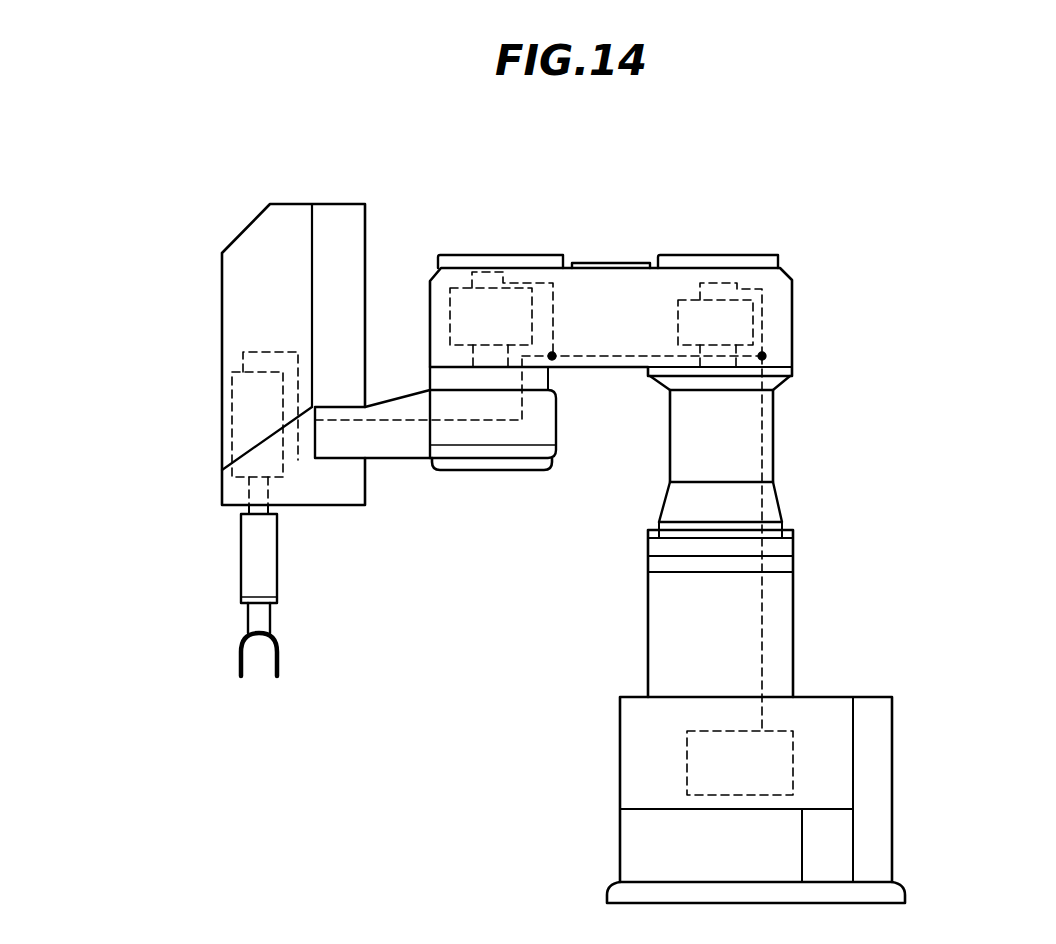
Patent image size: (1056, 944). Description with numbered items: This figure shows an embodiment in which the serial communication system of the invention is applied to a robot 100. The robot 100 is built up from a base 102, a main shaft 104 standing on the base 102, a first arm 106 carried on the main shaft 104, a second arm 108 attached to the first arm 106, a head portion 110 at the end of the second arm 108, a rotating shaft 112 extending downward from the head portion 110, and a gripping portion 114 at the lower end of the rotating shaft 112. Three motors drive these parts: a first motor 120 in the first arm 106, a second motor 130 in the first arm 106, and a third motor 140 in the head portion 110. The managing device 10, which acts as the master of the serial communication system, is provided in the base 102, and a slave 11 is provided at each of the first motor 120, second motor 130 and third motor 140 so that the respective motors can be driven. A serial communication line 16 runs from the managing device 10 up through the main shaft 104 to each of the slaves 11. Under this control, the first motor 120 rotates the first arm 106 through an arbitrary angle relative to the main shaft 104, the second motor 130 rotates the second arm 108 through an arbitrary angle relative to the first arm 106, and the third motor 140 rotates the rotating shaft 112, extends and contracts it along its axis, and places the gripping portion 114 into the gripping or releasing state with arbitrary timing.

The robot 100 is at (982, 176).
The head portion 110 is at (256, 222).
The slaves (devices) 11 is at (258, 354).
The third motor 140 is at (232, 378).
The rotating shaft 112 is at (240, 566).
The gripping portion 114 is at (242, 666).
The second arm 108 is at (408, 437).
The second motor 130 is at (498, 290).
The first arm 106 is at (628, 290).
The first motor 120 is at (740, 322).
The serial communication line 16 is at (772, 440).
The main shaft 104 is at (780, 507).
The managing device (master) 10 is at (797, 735).
The base 102 is at (893, 783).